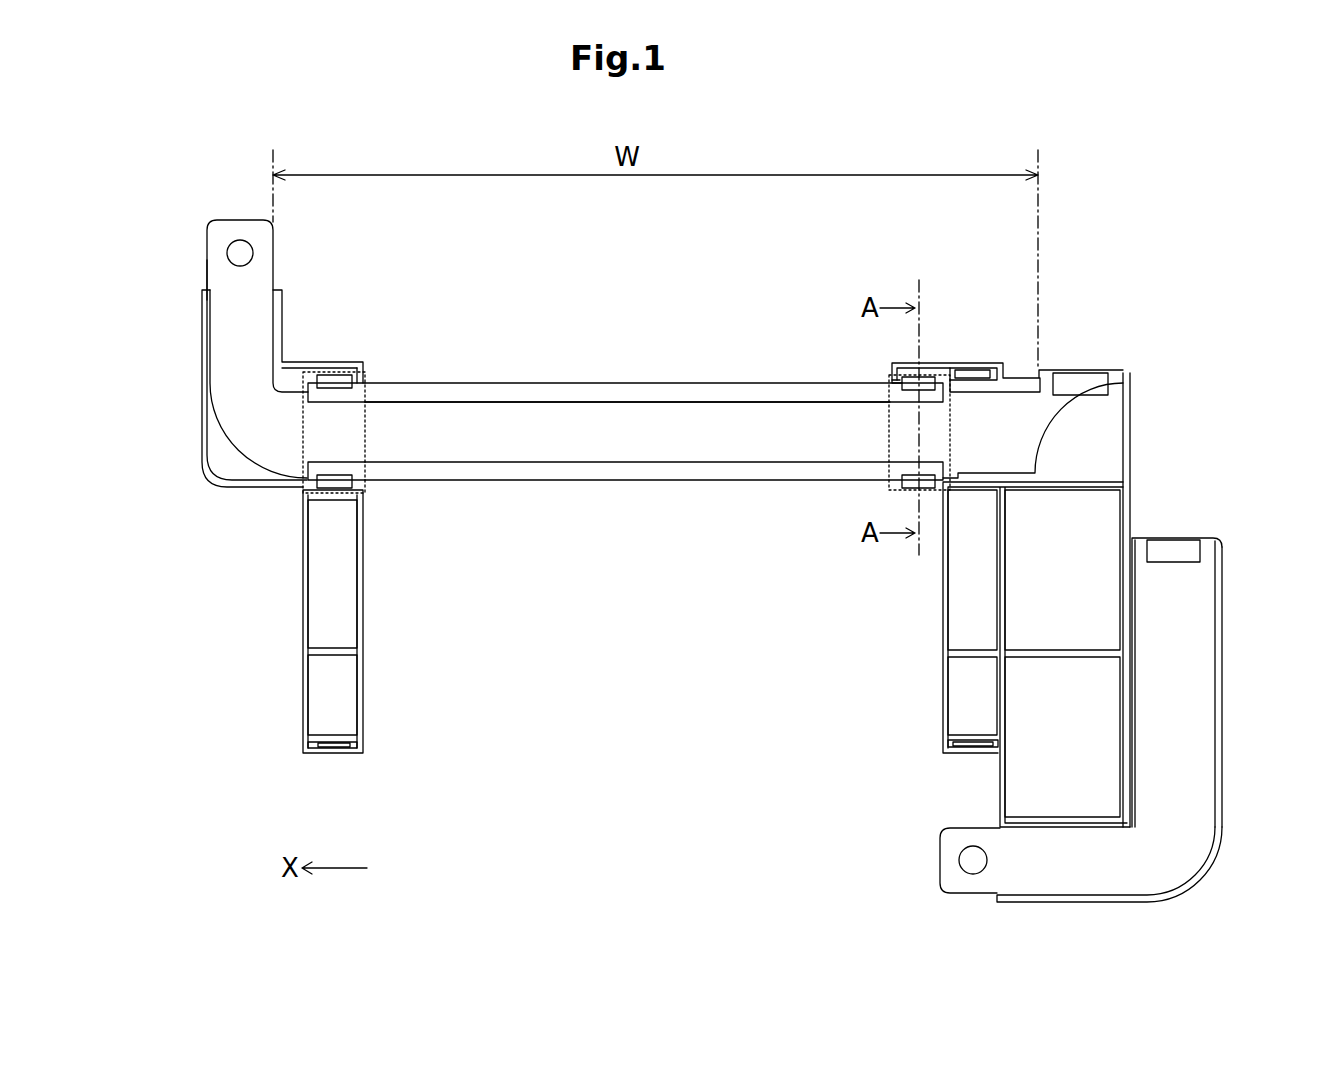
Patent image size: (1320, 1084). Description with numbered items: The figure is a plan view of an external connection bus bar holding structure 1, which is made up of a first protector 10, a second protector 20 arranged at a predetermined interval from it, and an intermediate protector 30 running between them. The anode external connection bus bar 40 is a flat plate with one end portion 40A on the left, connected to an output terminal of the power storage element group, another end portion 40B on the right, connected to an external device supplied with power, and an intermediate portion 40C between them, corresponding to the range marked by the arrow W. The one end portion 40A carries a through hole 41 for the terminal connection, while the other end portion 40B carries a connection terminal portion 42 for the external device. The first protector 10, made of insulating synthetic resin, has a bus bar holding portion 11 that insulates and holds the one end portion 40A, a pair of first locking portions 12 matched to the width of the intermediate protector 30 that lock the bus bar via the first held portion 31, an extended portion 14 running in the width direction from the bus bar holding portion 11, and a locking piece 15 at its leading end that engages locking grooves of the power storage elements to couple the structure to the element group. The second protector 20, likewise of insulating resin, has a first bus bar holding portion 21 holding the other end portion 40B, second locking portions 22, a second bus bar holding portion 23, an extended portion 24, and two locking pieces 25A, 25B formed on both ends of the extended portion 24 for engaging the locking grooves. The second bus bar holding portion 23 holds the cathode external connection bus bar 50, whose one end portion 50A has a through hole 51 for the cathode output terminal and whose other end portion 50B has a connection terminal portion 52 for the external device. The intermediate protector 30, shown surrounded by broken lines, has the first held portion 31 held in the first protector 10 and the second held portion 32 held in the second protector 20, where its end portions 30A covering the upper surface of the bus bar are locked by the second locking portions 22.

The external connection bus bar holding structure 1 is at (662, 742).
The first protector 10 is at (187, 335).
The bus bar holding portion 11 is at (207, 430).
The first locking portions 12 is at (332, 380).
The extended portion 14 is at (365, 553).
The locking piece 15 is at (342, 748).
The second protector 20 is at (1149, 384).
The first bus bar holding portion 21 is at (1130, 467).
The second locking portions 22 is at (928, 378).
The second bus bar holding portion 23 is at (1210, 885).
The extended portion 24 is at (940, 605).
The locking piece 25A is at (965, 752).
The locking piece 25B is at (977, 370).
The intermediate protector 30 is at (617, 369).
The end portions 30A is at (424, 395).
The first held portion 31 is at (365, 380).
The second held portion 32 is at (890, 380).
The anode external connection bus bar 40 is at (292, 254).
The one end portion 40A is at (218, 268).
The other end portion 40B is at (1107, 415).
The intermediate portion 40C is at (722, 413).
The through hole 41 is at (240, 240).
The connection terminal portion 42 is at (1080, 372).
The cathode external connection bus bar 50 is at (968, 911).
The one end portion 50A is at (973, 838).
The other end portion 50B is at (1212, 553).
The through hole 51 is at (965, 860).
The connection terminal portion 52 is at (1177, 538).